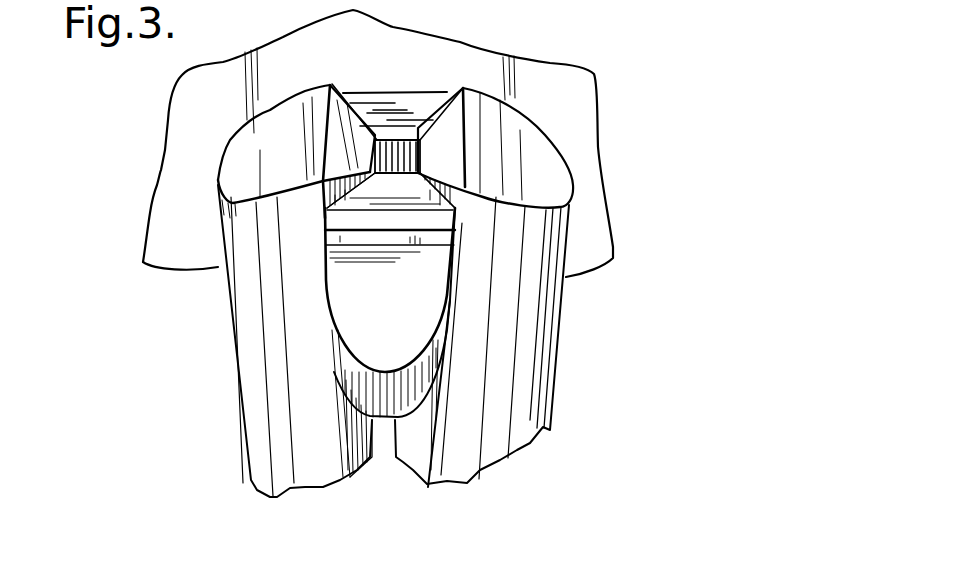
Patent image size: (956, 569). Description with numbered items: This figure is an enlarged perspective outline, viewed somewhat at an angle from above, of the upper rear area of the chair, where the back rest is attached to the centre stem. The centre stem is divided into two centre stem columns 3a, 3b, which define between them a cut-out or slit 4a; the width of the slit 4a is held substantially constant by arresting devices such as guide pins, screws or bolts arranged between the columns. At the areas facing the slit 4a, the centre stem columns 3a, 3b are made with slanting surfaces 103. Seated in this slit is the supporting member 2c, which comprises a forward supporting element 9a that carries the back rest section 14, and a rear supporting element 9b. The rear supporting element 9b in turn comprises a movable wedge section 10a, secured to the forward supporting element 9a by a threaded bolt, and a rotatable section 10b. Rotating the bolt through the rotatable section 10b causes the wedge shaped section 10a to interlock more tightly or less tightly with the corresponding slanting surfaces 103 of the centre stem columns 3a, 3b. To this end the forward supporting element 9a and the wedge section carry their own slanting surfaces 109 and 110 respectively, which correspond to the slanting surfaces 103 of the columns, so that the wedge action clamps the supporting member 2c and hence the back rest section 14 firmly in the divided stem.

The back rest section 14 is at (166, 213).
The centre stem column 3a is at (518, 415).
The centre stem column 3b is at (279, 444).
The supporting member 2c is at (312, 304).
The slit 4a is at (402, 163).
The forward supporting element 9a is at (417, 95).
The rear supporting element 9b is at (468, 302).
The movable wedge section 10a is at (417, 221).
The rotatable section 10b is at (395, 418).
The slanting surfaces 103 is at (448, 198).
The slanting surface 109 is at (404, 111).
The slanting surface 110 is at (423, 171).